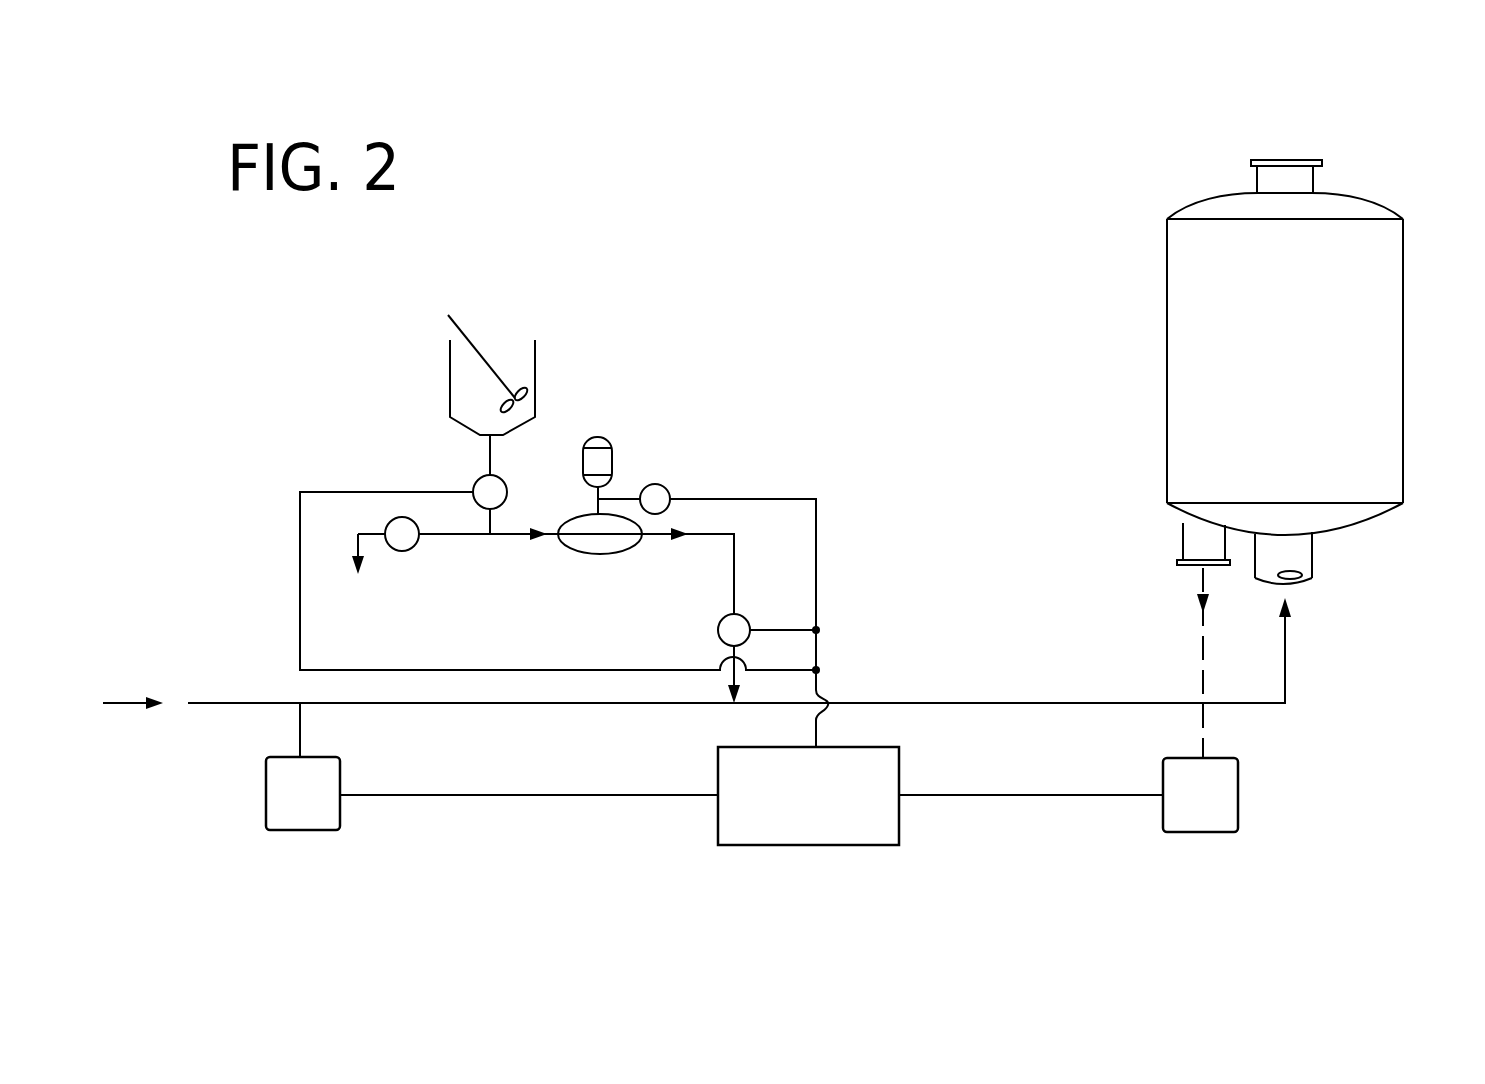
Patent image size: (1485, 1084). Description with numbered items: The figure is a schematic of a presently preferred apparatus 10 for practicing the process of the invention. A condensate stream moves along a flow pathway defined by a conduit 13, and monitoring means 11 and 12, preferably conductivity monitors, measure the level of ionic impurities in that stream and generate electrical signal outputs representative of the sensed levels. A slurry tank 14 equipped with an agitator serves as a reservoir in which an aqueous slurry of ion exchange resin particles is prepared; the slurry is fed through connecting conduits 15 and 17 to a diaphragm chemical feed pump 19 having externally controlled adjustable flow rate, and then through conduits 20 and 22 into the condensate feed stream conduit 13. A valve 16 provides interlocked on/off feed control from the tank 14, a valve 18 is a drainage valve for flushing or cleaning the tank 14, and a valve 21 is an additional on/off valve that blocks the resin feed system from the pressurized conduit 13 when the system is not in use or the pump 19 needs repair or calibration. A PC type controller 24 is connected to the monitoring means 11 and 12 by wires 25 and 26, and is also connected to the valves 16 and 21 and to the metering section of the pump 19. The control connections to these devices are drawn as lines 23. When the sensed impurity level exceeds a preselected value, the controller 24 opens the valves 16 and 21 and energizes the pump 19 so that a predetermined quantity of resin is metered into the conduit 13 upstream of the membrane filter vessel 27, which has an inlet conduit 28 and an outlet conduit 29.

The apparatus 10 is at (892, 297).
The monitoring means 11 is at (340, 771).
The monitoring means 12 is at (1238, 790).
The conduit 13 is at (222, 703).
The slurry tank 14 is at (535, 362).
The connecting conduit 15 is at (492, 450).
The valve 16 is at (507, 492).
The connecting conduit 17 is at (506, 537).
The valve 18 is at (404, 551).
The diaphragm chemical feed pump 19 is at (608, 556).
The conduit 20 is at (710, 537).
The valve 21 is at (746, 618).
The conduit 22 is at (735, 647).
The control lines 23 is at (468, 670).
The PC type controller 24 is at (783, 845).
The wire 25 is at (604, 795).
The wire 26 is at (990, 795).
The membrane filter vessel 27 is at (1403, 282).
The inlet conduit 28 is at (1312, 550).
The outlet conduit 29 is at (1183, 538).